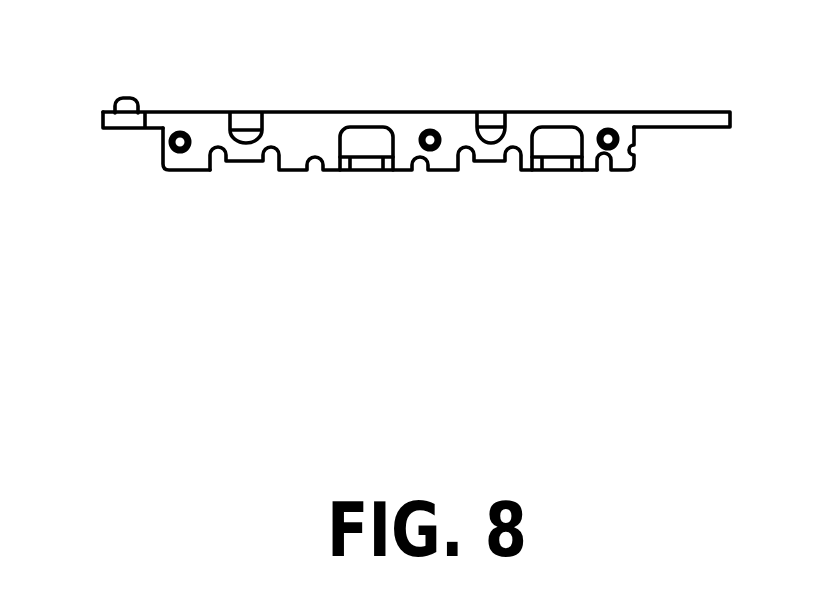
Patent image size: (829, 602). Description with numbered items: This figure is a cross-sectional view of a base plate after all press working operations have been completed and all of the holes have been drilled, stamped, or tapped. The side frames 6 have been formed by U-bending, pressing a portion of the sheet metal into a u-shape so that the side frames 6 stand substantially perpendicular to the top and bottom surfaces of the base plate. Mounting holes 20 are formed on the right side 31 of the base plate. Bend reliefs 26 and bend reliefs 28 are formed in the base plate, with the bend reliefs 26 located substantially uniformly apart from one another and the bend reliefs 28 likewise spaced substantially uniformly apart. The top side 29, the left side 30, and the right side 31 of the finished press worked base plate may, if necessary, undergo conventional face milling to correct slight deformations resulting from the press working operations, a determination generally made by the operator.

The side frame 6 is at (632, 143).
The mounting holes 20 is at (168, 147).
The bend reliefs 26 is at (247, 120).
The bend reliefs 28 is at (368, 137).
The top side 29 is at (173, 112).
The left side 30 is at (185, 155).
The right side 31 is at (635, 162).